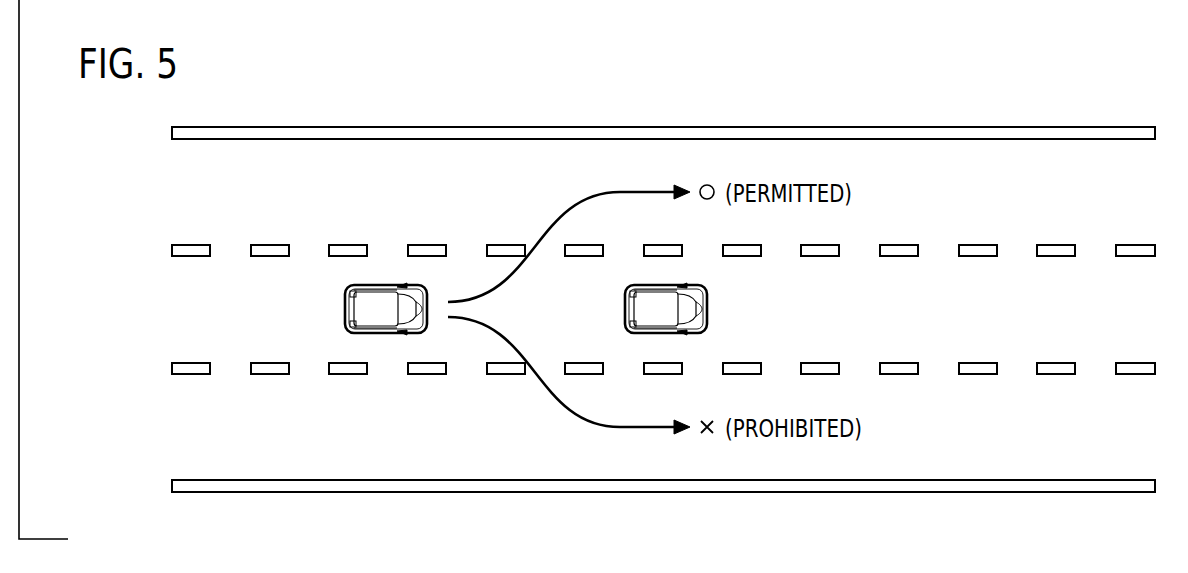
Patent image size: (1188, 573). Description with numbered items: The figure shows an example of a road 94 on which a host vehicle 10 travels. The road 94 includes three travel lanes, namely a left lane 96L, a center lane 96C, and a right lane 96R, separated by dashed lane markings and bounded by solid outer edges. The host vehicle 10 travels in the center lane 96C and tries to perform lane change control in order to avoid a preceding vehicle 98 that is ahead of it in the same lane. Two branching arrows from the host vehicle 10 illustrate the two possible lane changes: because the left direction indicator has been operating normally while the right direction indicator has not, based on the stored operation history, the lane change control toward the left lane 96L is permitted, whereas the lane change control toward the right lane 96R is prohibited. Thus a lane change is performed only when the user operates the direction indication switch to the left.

The host vehicle 10 is at (346, 292).
The road 94 is at (704, 104).
The left lane 96L is at (202, 194).
The center lane 96C is at (202, 315).
The right lane 96R is at (202, 433).
The preceding vehicle 98 is at (703, 295).